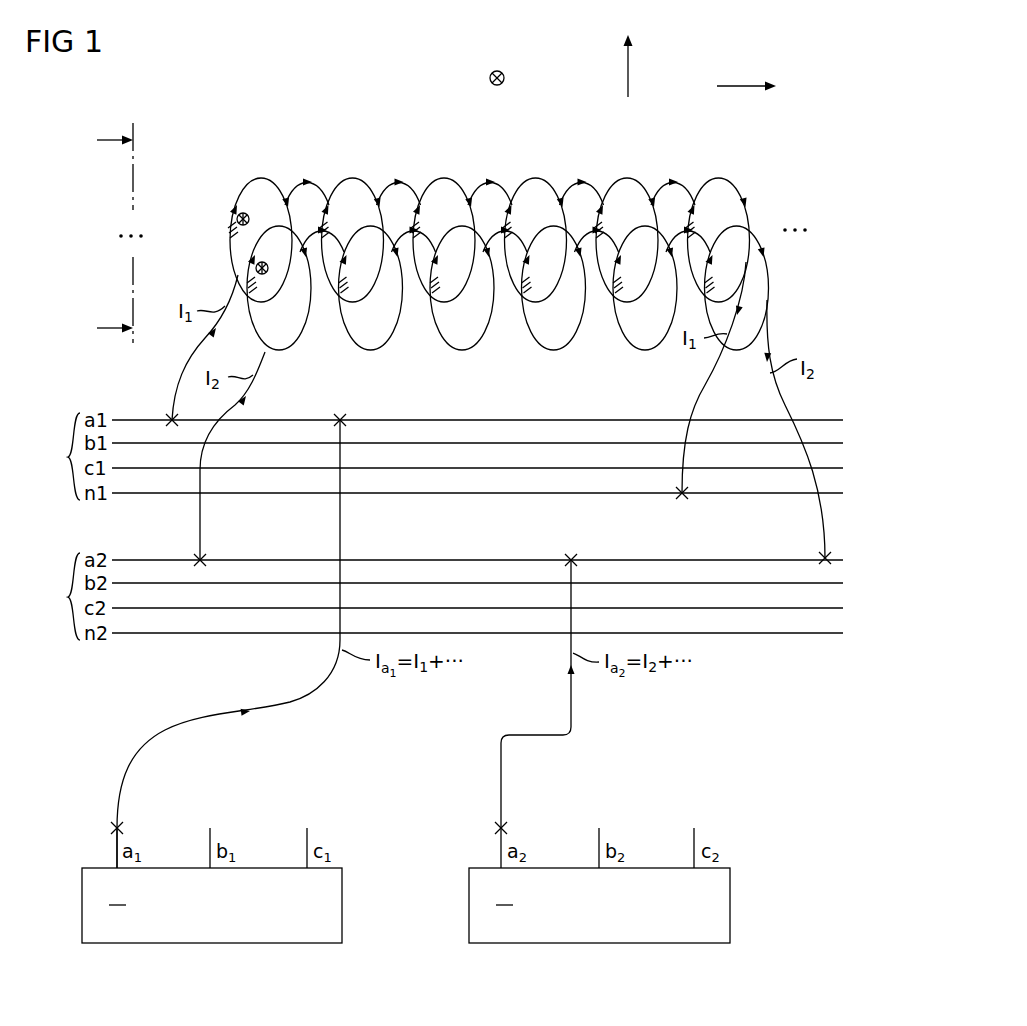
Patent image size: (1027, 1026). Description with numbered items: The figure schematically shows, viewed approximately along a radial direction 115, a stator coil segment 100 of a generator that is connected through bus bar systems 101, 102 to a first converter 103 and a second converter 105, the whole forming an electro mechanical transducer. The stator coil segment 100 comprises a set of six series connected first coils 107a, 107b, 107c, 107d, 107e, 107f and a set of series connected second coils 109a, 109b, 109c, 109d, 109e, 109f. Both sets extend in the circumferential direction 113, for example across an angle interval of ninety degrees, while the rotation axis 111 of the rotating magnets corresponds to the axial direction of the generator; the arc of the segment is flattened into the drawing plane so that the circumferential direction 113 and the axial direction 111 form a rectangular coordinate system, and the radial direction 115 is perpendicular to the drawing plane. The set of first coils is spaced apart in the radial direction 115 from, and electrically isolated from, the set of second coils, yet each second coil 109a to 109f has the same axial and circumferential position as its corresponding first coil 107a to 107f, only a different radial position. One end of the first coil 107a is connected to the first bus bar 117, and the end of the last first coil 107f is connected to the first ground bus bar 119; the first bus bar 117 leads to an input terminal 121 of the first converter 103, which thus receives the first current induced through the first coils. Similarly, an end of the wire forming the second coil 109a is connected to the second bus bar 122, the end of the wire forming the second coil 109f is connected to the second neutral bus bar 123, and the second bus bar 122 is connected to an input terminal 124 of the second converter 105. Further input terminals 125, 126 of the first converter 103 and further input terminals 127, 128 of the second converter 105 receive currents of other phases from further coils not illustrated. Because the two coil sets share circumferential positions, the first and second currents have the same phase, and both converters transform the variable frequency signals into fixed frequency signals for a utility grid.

The stator coil segment 100 is at (418, 233).
The bus bar system 101 is at (436, 456).
The bus bar system 102 is at (435, 596).
The first converter 103 is at (207, 945).
The second converter 105 is at (597, 945).
The first coil 107a is at (261, 178).
The first coil 107b is at (352, 178).
The first coil 107c is at (444, 178).
The first coil 107d is at (536, 178).
The first coil 107e is at (627, 178).
The first coil 107f is at (718, 178).
The second coil 109a is at (273, 350).
The second coil 109b is at (364, 350).
The second coil 109c is at (456, 350).
The second coil 109d is at (548, 350).
The second coil 109e is at (639, 350).
The second coil 109f is at (730, 350).
The rotation axis 111 is at (630, 70).
The circumferential direction 113 is at (738, 85).
The radial direction 115 is at (505, 80).
The first bus bar 117 is at (130, 418).
The first ground bus bar 119 is at (147, 495).
The input terminal 121 is at (112, 866).
The second bus bar 122 is at (232, 558).
The second neutral bus bar 123 is at (152, 635).
The input terminal 124 is at (497, 866).
The further input terminal 125 is at (207, 866).
The further input terminal 126 is at (304, 866).
The further input terminal 127 is at (596, 866).
The further input terminal 128 is at (691, 866).